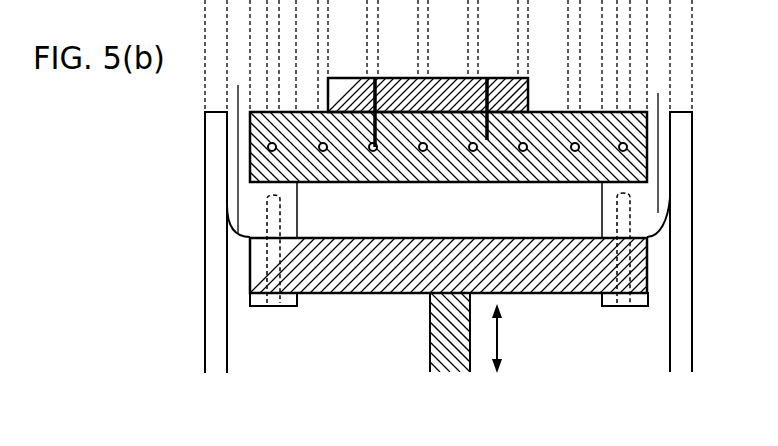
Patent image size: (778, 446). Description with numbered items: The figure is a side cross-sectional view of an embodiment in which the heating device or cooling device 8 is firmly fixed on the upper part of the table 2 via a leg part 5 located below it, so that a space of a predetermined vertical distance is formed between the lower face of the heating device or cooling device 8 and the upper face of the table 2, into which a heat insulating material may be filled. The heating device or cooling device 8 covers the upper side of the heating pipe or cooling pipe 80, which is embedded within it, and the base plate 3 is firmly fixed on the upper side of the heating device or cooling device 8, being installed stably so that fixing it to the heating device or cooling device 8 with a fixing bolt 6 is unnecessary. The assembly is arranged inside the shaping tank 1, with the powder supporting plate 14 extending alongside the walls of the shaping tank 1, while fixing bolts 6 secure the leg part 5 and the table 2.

The shaping tank 1 is at (217, 220).
The powder supporting plate 14 is at (444, 148).
The heating device or cooling device 8 is at (648, 150).
The heating pipe or cooling pipe 80 is at (275, 140).
The base plate 3 is at (512, 78).
The leg part 5 is at (287, 218).
The table 2 is at (308, 265).
The fixing bolt 6 is at (376, 78).